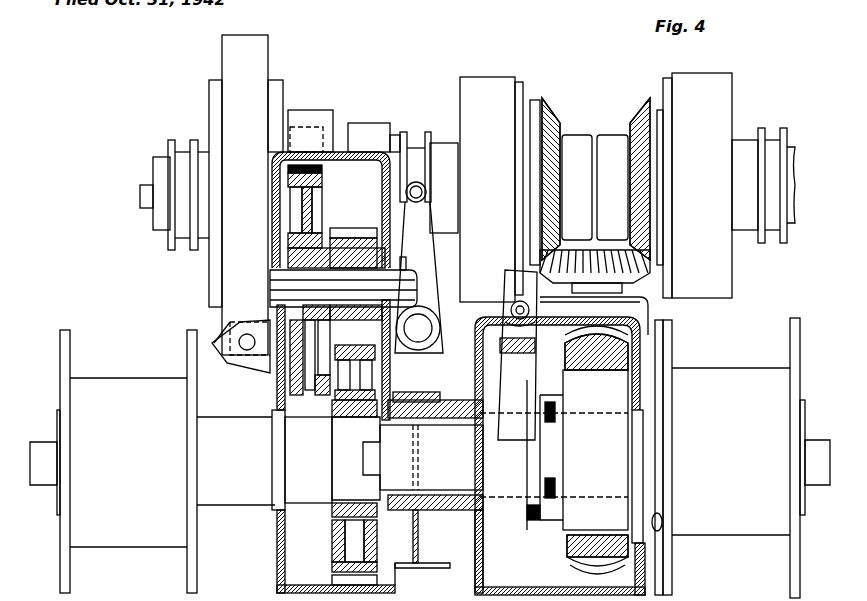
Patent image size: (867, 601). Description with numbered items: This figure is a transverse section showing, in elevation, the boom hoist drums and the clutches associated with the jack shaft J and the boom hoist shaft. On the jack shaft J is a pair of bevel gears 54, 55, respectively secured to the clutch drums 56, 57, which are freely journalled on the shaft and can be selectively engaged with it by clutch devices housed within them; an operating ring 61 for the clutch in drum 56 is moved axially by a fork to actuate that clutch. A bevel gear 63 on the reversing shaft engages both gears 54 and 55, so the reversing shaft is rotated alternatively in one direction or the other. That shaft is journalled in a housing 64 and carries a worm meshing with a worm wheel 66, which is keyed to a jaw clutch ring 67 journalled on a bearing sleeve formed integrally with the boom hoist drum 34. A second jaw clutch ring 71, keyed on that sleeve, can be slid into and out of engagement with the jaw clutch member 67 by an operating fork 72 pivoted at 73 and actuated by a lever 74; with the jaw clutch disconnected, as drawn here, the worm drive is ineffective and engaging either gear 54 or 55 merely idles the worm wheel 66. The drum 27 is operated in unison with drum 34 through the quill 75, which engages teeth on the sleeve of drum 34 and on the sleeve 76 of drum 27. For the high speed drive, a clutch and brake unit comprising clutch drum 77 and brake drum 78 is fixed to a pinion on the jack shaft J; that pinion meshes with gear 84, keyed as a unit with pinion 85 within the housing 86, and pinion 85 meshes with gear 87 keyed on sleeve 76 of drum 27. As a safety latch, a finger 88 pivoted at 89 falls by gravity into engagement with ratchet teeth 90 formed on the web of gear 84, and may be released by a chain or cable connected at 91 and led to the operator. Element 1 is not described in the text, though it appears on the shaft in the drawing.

The shaft 1 is at (400, 272).
The drum 27 is at (105, 548).
The boom hoist drum 34 is at (717, 535).
The bevel gear 54 is at (556, 120).
The bevel gear 55 is at (640, 118).
The clutch drum 56 is at (491, 189).
The clutch drum 57 is at (729, 185).
The operating ring 61 is at (416, 140).
The bevel gear 63 is at (650, 283).
The housing 64 is at (419, 277).
The worm wheel 66 is at (580, 572).
The jaw clutch ring 67 is at (554, 450).
The jaw clutch ring 71 is at (480, 543).
The operating fork 72 is at (510, 364).
The pivot 73 is at (516, 310).
The lever 74 is at (508, 280).
The quill 75 is at (431, 467).
The sleeve 76 is at (332, 467).
The clutch drum 77 is at (209, 80).
The brake drum 78 is at (237, 35).
The gear 84 is at (322, 182).
The pinion 85 is at (358, 235).
The housing 86 is at (275, 213).
The gear 87 is at (330, 560).
The latch member 88 is at (265, 315).
The pivot 89 is at (247, 345).
The ratchet teeth 90 is at (292, 200).
The connection point 91 is at (212, 343).
The jack shaft J is at (140, 190).